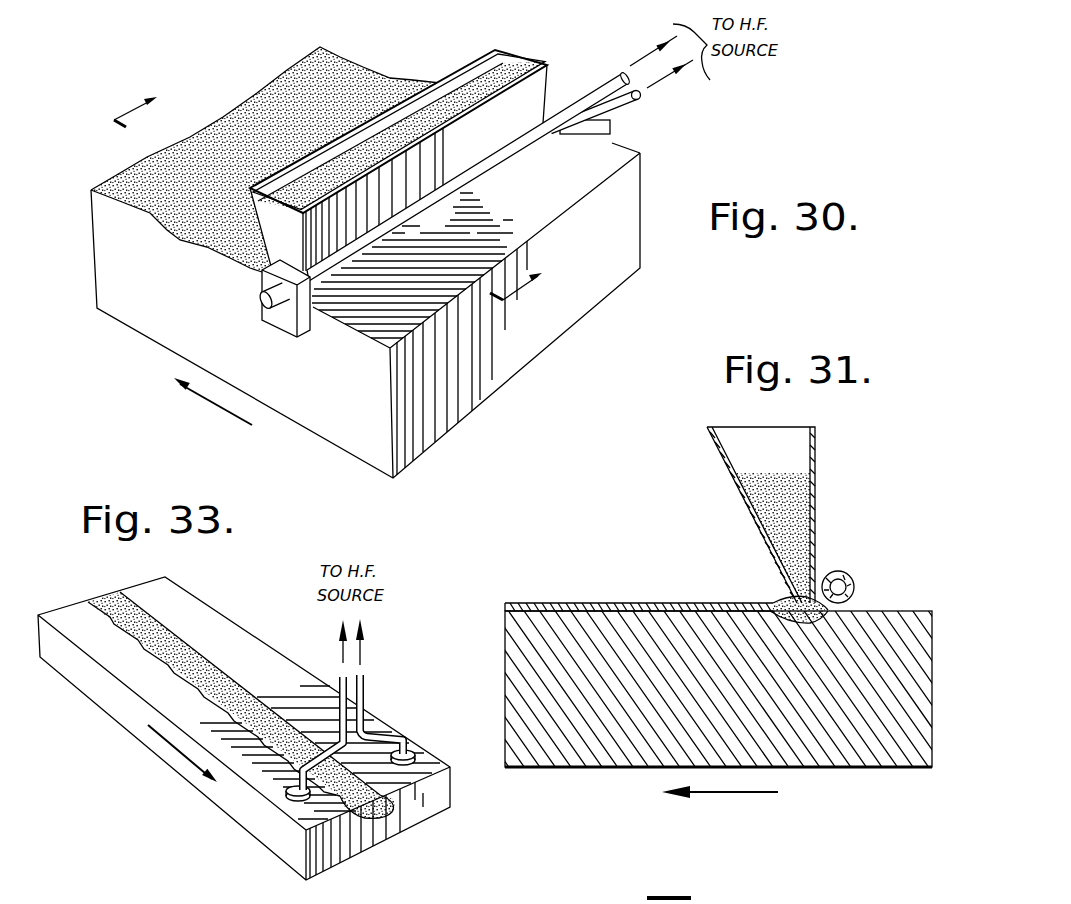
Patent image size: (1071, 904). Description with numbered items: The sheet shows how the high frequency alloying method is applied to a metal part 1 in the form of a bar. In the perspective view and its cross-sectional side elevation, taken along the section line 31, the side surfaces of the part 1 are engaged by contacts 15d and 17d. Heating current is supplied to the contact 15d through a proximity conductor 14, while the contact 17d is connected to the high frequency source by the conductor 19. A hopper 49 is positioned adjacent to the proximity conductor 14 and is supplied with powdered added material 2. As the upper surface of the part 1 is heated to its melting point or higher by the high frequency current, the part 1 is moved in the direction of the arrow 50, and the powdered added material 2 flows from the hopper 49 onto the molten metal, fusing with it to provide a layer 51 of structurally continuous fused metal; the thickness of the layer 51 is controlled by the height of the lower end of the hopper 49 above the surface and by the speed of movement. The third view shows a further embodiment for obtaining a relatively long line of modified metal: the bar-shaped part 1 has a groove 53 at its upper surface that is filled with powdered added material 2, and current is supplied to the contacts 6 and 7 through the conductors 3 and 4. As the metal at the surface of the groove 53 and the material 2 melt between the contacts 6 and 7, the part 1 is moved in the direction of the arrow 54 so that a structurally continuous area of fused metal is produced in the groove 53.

In FIG. 30, the metal part 1 is at (612, 288).
In FIG. 31, the metal part 1 is at (927, 690).
In FIG. 33, the metal part 1 is at (445, 753).
In FIG. 30, the powdered added material 2 is at (477, 82).
In FIG. 33, the conductor 3 is at (339, 693).
In FIG. 33, the conductor 4 is at (366, 690).
In FIG. 33, the contact 6 is at (410, 748).
In FIG. 33, the contact 7 is at (283, 812).
In FIG. 30, the proximity conductor 14 is at (480, 170).
In FIG. 31, the proximity conductor 14 is at (850, 573).
In FIG. 30, the contact 15d is at (302, 337).
In FIG. 30, the contact 17d is at (624, 135).
In FIG. 30, the conductor 19 is at (640, 100).
In FIG. 30, the section line for cross-sectional view 31 is at (343, 189).
In FIG. 30, the hopper 49 is at (523, 62).
In FIG. 31, the hopper 49 is at (712, 427).
In FIG. 30, the arrow indicating direction of movement 50 is at (220, 408).
In FIG. 30, the layer of fused metal 51 is at (393, 78).
In FIG. 31, the layer of fused metal 51 is at (623, 603).
In FIG. 33, the groove 53 is at (392, 812).
In FIG. 33, the arrow indicating direction of movement 54 is at (183, 757).